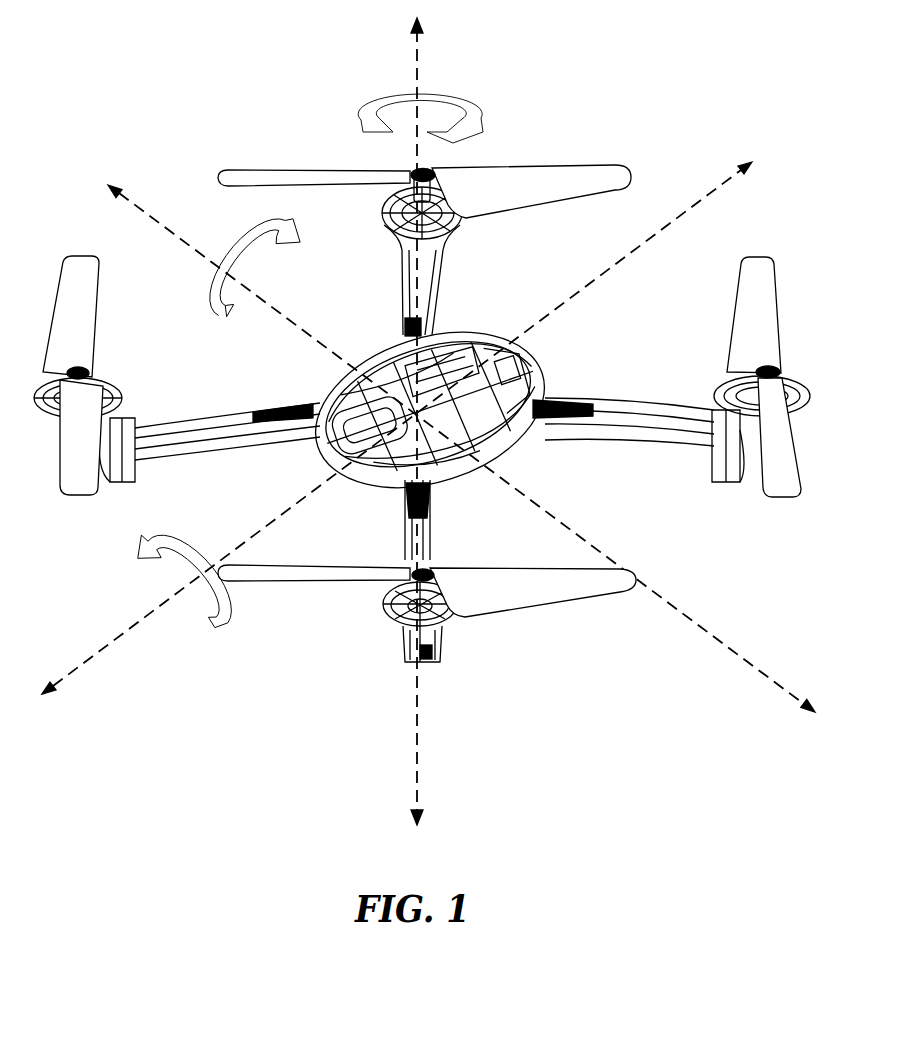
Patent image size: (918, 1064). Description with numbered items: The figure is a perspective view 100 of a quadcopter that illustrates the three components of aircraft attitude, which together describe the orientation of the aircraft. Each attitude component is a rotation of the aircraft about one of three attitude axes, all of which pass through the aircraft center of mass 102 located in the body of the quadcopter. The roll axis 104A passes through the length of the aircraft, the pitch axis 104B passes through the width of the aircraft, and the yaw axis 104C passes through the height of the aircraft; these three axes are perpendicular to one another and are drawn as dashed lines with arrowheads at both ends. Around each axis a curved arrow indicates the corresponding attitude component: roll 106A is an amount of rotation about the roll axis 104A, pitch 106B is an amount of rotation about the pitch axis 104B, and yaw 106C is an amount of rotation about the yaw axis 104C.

The perspective view of quadcopter 100 is at (140, 125).
The aircraft center of mass 102 is at (410, 385).
The roll axis 104A is at (113, 640).
The pitch axis 104B is at (148, 212).
The yaw axis 104C is at (416, 62).
The roll 106A is at (152, 548).
The pitch 106B is at (215, 310).
The yaw 106C is at (368, 116).